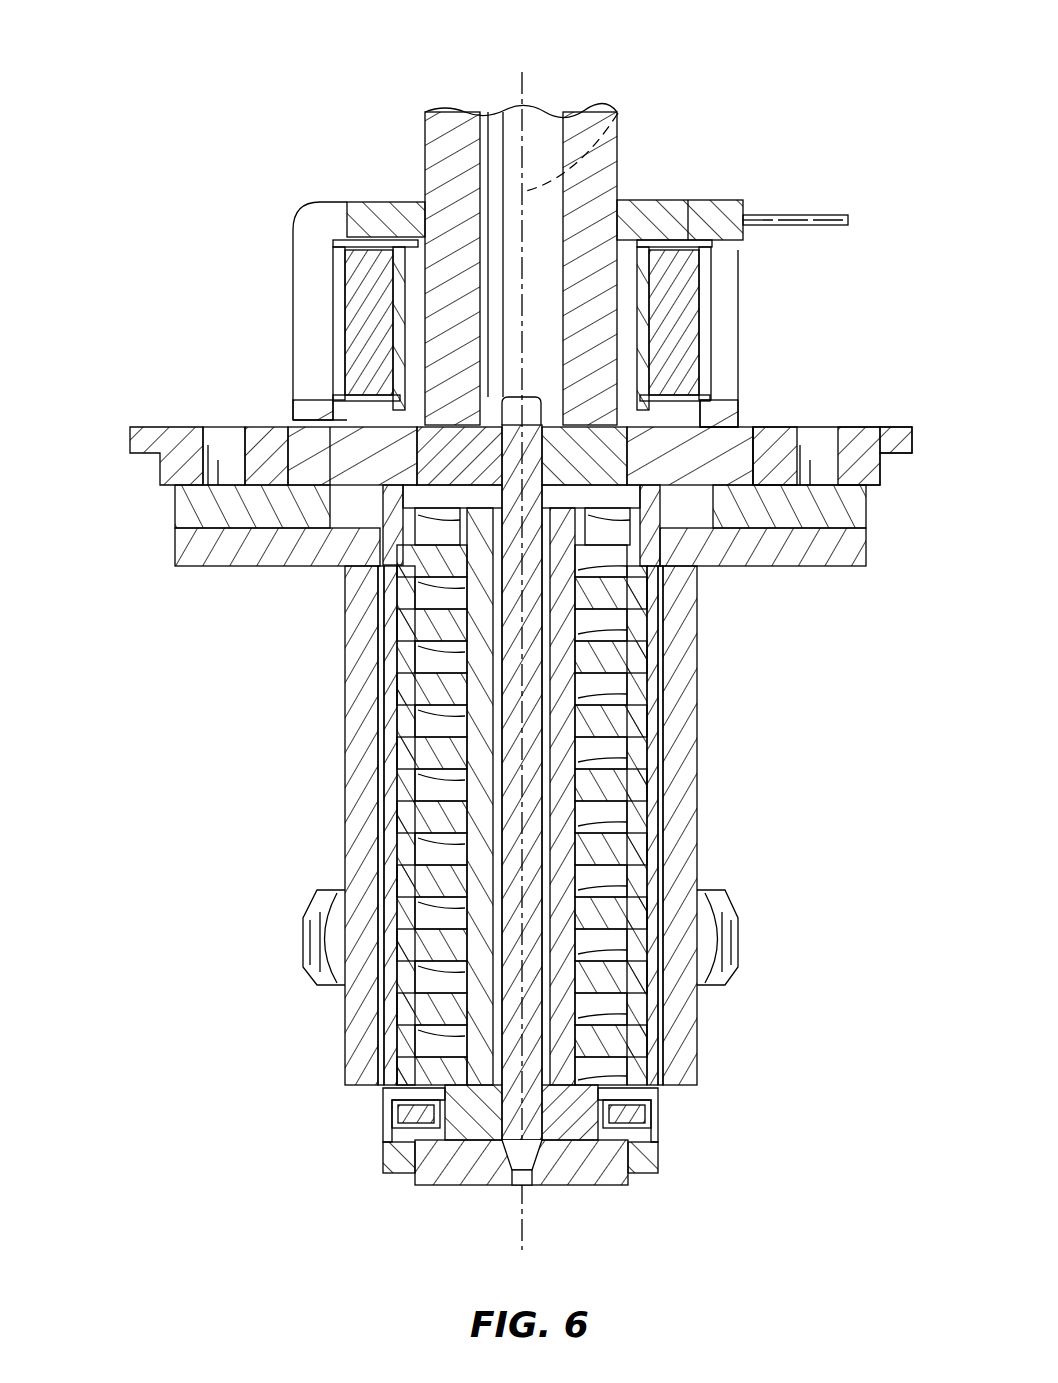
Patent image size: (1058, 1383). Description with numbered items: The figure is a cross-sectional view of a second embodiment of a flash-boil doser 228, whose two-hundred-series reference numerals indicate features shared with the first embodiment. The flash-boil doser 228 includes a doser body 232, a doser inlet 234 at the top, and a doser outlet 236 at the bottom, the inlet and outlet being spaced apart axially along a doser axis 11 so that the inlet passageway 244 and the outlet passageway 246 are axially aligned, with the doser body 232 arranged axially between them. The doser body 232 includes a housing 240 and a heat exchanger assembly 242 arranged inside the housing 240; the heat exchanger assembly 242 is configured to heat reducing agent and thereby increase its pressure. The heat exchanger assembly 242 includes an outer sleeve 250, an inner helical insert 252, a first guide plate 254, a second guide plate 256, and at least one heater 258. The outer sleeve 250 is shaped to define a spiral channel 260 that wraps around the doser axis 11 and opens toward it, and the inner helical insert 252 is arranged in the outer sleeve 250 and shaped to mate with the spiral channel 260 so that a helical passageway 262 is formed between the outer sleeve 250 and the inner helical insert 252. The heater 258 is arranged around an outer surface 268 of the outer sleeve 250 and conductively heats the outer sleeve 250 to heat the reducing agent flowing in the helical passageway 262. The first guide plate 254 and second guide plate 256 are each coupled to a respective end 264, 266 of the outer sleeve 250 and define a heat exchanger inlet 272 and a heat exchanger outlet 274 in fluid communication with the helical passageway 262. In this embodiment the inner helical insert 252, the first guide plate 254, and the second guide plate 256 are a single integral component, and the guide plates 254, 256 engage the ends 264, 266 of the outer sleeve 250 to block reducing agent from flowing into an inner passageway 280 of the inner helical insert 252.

The flash-boil doser 228 is at (180, 182).
The doser inlet 234 is at (388, 158).
The inner bore 244 is at (497, 155).
The doser axis 11 is at (616, 118).
The doser body 232 is at (185, 322).
The housing 240 is at (145, 412).
The first guide plate 254 is at (397, 527).
The end of the outer sleeve 264 is at (660, 503).
The inner passageway 280 is at (420, 508).
The heat exchanger inlet 272 is at (490, 530).
The heat exchanger assembly 242 is at (200, 740).
The heater 258 is at (360, 870).
The outer surface 268 is at (662, 820).
The outer sleeve 250 is at (380, 812).
The inner helical insert 252 is at (378, 762).
The spiral channel 260 is at (627, 718).
The helical passageway 262 is at (602, 797).
The heat exchanger outlet 274 is at (420, 1085).
The second guide plate 256 is at (430, 1125).
The doser outlet 236 is at (397, 1188).
The end of the outer sleeve 266 is at (650, 1180).
The shaft end 246 is at (513, 1188).